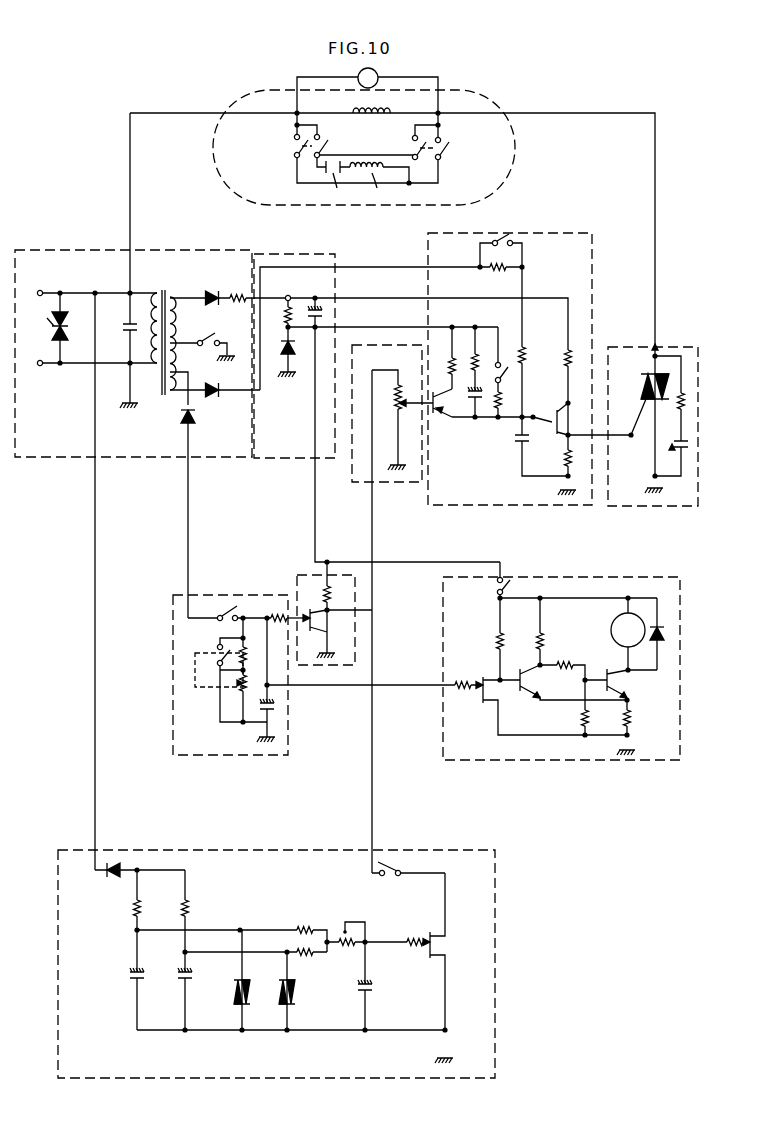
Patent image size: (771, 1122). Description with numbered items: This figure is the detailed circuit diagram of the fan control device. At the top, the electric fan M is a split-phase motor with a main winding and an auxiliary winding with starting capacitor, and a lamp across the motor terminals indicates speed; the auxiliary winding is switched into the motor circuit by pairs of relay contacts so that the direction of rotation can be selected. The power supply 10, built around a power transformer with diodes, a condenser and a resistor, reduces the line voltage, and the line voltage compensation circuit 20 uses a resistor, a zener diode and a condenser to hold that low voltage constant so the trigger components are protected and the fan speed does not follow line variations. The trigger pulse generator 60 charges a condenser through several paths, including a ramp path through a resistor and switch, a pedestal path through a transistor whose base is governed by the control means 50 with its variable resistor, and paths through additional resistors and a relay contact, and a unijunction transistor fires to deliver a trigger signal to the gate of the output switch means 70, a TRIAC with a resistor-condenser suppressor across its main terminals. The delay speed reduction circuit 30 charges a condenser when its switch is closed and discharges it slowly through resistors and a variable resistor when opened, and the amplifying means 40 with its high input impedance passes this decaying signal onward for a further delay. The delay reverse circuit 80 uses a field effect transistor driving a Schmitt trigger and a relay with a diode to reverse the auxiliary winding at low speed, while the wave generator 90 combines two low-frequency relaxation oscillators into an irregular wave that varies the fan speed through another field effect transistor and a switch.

The electric fan M is at (477, 92).
The power supply 10 is at (108, 250).
The line voltage compensation circuit 20 is at (267, 253).
The delay speed reduction circuit 30 is at (241, 598).
The amplifying means 40 is at (306, 582).
The control means 50 is at (400, 482).
The trigger pulse generator 60 is at (553, 236).
The output switch means 70 is at (641, 346).
The delay reverse circuit 80 is at (608, 583).
The wave generator 90 is at (493, 952).